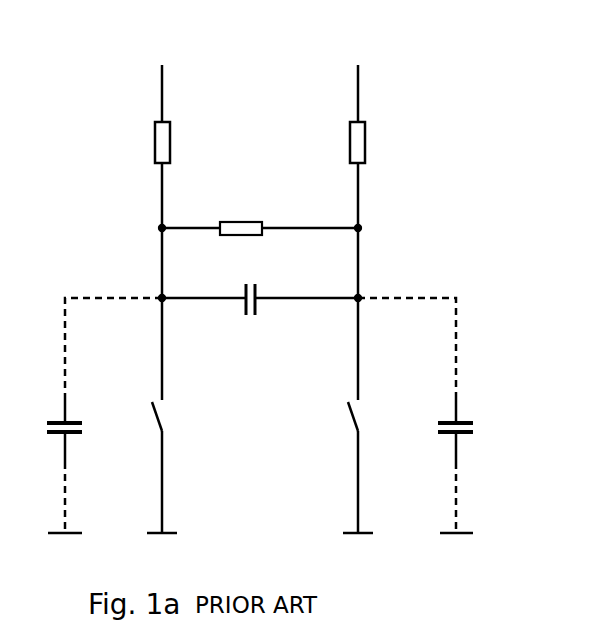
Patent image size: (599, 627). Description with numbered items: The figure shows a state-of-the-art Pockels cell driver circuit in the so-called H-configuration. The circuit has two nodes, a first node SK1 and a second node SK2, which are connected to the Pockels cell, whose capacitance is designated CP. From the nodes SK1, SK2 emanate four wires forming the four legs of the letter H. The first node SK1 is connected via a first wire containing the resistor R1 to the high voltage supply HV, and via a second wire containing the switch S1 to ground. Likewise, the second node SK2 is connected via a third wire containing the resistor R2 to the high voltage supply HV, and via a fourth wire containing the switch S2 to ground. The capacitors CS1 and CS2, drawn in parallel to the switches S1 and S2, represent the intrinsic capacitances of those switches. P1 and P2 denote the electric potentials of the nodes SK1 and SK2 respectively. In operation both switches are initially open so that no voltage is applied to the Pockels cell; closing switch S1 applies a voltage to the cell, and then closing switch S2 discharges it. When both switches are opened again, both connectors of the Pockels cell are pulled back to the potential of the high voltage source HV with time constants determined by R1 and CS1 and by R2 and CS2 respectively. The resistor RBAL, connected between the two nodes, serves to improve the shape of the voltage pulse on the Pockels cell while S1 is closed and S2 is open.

The high voltage supply HV is at (256, 75).
The resistor R1 is at (185, 143).
The resistor R2 is at (380, 143).
The resistor RBAL is at (260, 216).
The capacitance of the Pockels cell CP is at (260, 293).
The electric potential of node SK1 P1 is at (143, 280).
The electric potential of node SK2 P2 is at (380, 280).
The first node SK1 is at (156, 306).
The second node SK2 is at (365, 306).
The capacitor CS1 is at (75, 464).
The capacitor CS2 is at (467, 464).
The switch S1 is at (175, 466).
The switch S2 is at (371, 466).